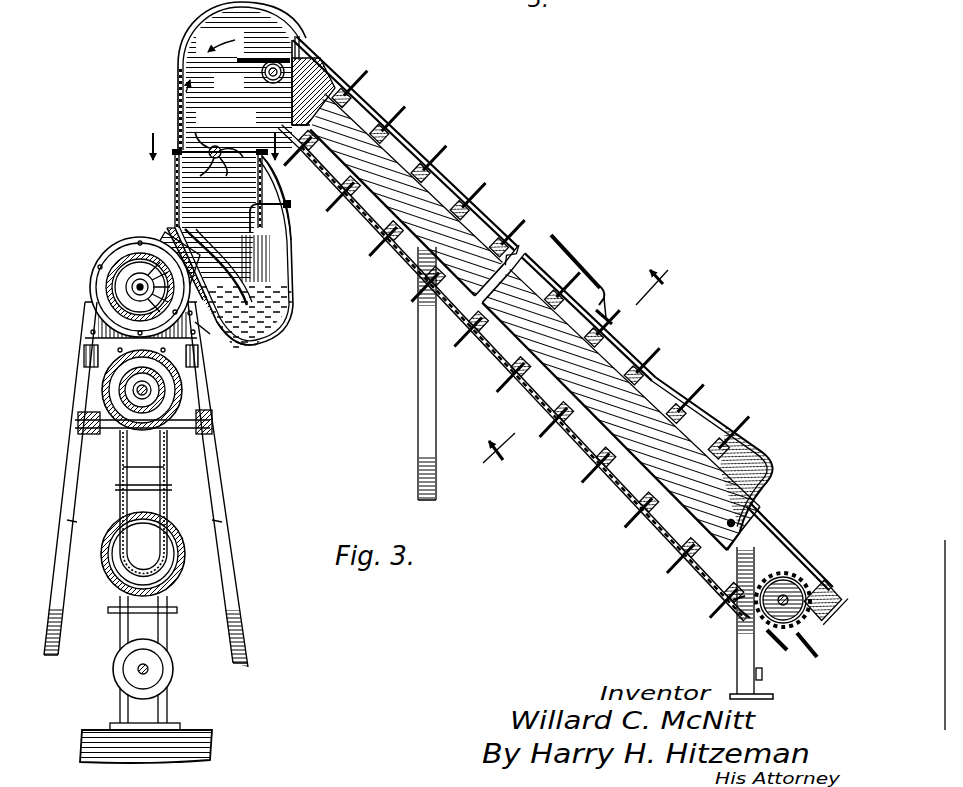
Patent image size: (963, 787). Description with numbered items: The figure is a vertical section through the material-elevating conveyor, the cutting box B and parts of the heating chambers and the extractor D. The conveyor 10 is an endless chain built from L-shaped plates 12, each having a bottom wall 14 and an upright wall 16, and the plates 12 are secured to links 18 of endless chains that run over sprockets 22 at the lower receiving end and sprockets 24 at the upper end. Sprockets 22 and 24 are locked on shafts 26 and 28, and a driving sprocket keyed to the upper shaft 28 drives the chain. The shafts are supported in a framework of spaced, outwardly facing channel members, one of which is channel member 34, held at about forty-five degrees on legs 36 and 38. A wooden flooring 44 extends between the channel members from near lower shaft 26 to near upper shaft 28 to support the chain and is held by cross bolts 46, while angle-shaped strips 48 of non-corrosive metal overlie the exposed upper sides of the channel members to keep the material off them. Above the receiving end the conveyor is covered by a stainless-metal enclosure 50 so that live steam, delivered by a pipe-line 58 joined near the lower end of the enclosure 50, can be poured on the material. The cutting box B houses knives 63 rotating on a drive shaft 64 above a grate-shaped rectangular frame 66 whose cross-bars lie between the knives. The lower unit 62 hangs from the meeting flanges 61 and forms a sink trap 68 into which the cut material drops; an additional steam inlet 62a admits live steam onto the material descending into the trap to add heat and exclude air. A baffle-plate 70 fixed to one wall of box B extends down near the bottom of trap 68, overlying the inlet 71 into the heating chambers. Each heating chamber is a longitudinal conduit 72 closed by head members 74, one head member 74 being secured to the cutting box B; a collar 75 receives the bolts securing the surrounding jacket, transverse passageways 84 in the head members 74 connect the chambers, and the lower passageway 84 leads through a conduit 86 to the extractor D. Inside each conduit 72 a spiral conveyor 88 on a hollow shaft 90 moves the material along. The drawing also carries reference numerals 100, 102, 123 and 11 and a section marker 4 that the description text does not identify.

The conveyor 10 is at (692, 445).
The L-shaped plates 12 is at (352, 130).
The bottom wall 14 is at (252, 62).
The upright wall 16 is at (305, 46).
The links 18 is at (280, 70).
The sprockets 22 is at (737, 607).
The sprockets 24 is at (313, 77).
The shaft 26 is at (739, 612).
The shaft 28 is at (265, 76).
The channel member 34 is at (741, 524).
The leg 36 is at (418, 387).
The leg 38 is at (753, 660).
The flooring 44 is at (402, 172).
The cross bolts 46 is at (377, 146).
The angle-shaped strips 48 is at (774, 470).
The enclosure 50 is at (505, 224).
The pipe-line 58 is at (574, 264).
The meeting flanges 61 is at (168, 140).
The lower unit 62 is at (294, 279).
The additional steam inlet 62a is at (290, 214).
The knives 63 is at (198, 135).
The drive shaft 64 is at (219, 149).
The grate shaped rectangular frame 66 is at (176, 212).
The sink trap 68 is at (285, 328).
The baffle-plate 70 is at (262, 256).
The inlet 71 is at (160, 240).
The longitudinal conduit 72 is at (90, 320).
The head member 74 is at (110, 278).
The collar 75 is at (97, 300).
The passageways 84 is at (172, 436).
The conduit 86 is at (167, 462).
The spiral conveyor 88 is at (138, 283).
The hollow shaft 90 is at (129, 282).
The legs 100 is at (56, 648).
The drain connection 102 is at (197, 327).
The drive pulley 123 is at (148, 672).
The air flow arrows 11 is at (217, 161).
The cutting box B is at (178, 82).
The extractor D is at (156, 556).
The section line 4 is at (570, 358).